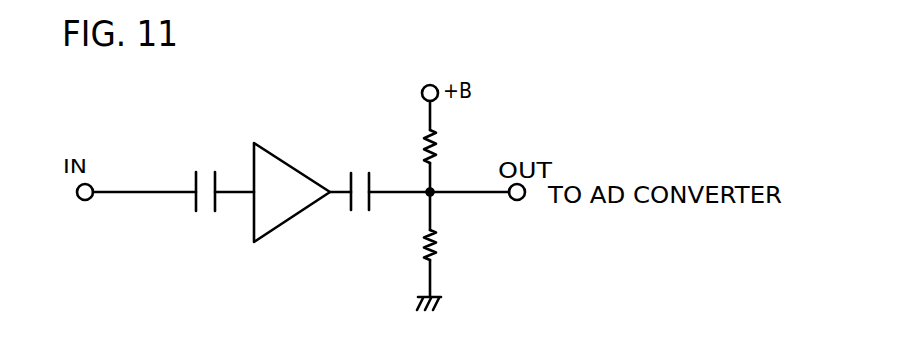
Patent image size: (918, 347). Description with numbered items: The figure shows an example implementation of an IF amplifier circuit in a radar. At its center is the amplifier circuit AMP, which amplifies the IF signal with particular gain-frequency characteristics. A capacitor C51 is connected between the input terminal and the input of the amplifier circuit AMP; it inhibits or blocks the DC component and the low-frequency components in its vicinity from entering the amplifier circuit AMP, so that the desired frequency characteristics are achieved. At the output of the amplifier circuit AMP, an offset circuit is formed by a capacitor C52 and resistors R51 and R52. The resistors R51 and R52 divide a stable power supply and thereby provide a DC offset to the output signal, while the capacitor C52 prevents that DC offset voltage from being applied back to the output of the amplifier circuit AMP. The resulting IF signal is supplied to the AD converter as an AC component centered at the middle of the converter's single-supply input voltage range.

The capacitor C51 is at (206, 176).
The capacitor C52 is at (354, 177).
The resistor R51 is at (452, 146).
The resistor R52 is at (454, 245).
The amplifier circuit AMP is at (292, 183).